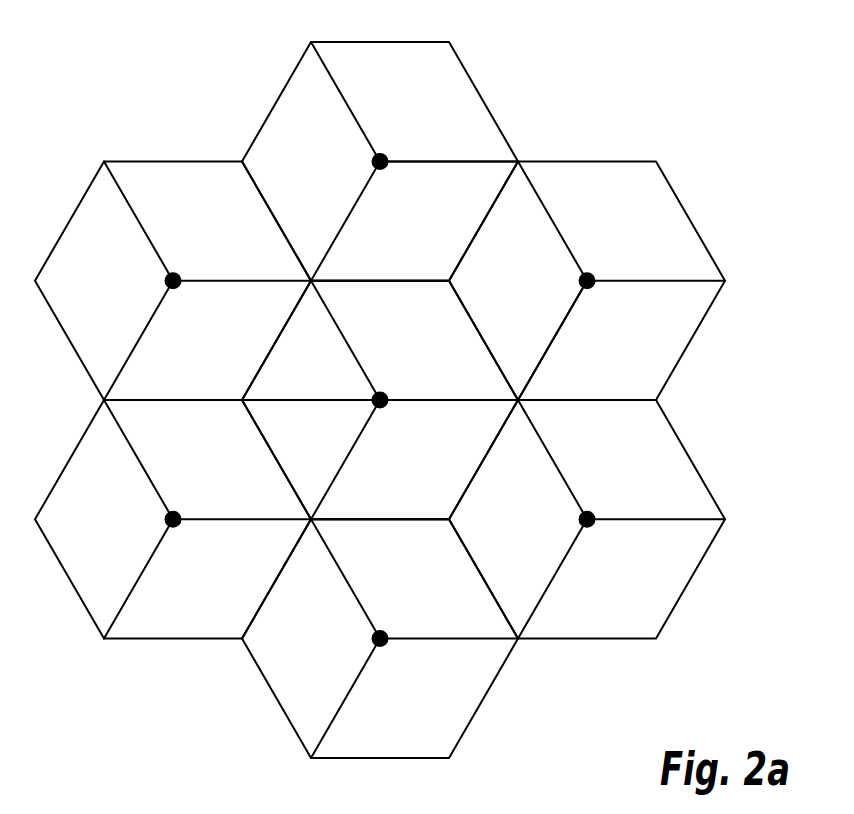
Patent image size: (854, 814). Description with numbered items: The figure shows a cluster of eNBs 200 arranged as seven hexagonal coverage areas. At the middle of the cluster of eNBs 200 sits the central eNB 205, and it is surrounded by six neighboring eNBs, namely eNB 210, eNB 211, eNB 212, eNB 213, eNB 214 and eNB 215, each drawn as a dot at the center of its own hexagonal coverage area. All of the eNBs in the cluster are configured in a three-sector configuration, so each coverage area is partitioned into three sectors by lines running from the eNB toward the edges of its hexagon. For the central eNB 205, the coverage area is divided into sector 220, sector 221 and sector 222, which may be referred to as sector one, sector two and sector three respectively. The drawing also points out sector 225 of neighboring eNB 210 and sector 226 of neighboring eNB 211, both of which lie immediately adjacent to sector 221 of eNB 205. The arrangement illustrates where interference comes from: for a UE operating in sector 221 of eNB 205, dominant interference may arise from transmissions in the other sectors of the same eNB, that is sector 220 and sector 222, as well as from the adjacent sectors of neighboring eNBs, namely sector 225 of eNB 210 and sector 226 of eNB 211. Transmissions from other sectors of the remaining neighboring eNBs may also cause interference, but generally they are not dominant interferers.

The cluster of eNBs 200 is at (117, 40).
The eNB 205 is at (373, 399).
The eNB 210 is at (580, 280).
The eNB 211 is at (373, 161).
The eNB 212 is at (166, 280).
The eNB 213 is at (166, 519).
The eNB 214 is at (373, 638).
The eNB 215 is at (580, 519).
The sector 220 is at (263, 400).
The sector 221 is at (430, 300).
The sector 222 is at (435, 498).
The sector 225 is at (547, 302).
The sector 226 is at (449, 178).